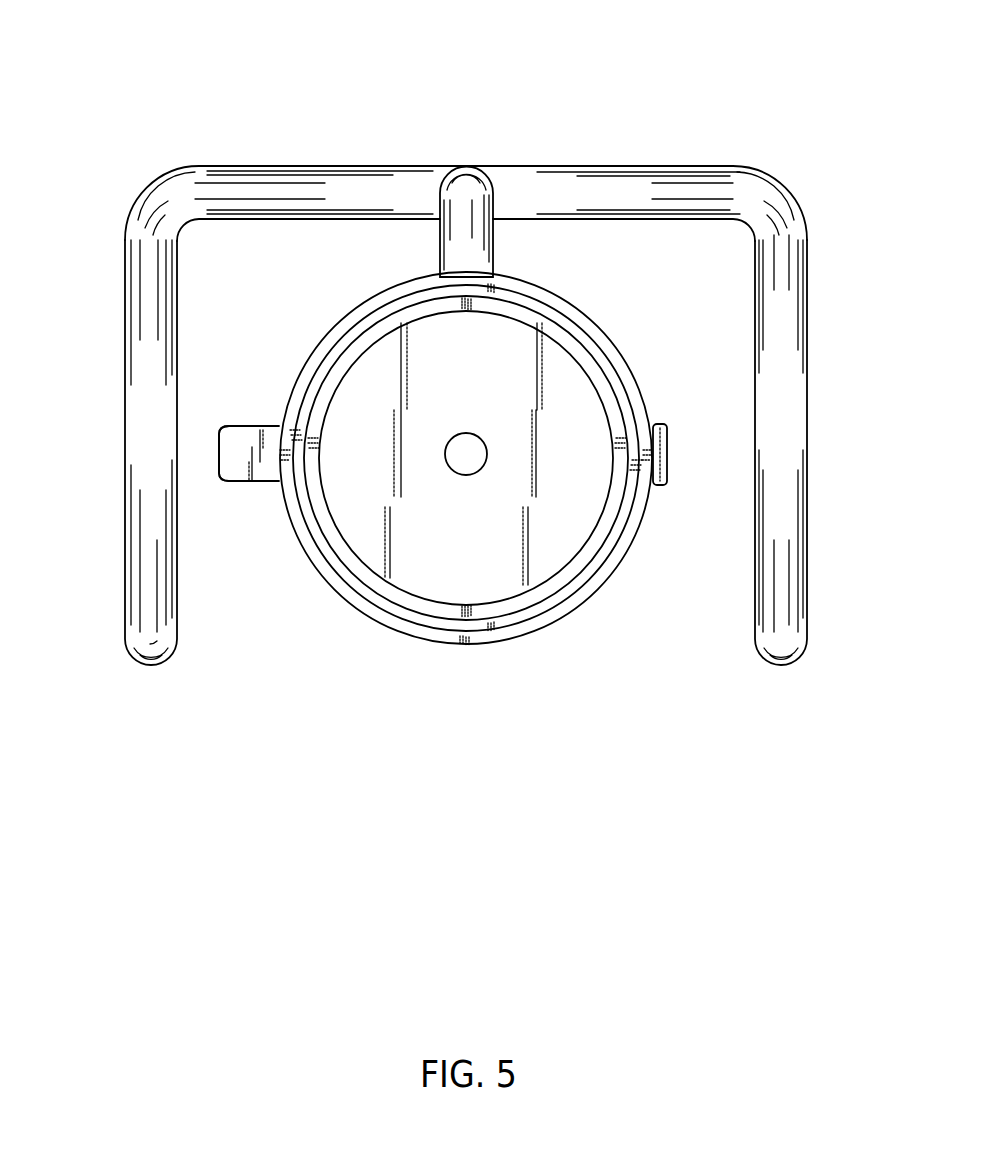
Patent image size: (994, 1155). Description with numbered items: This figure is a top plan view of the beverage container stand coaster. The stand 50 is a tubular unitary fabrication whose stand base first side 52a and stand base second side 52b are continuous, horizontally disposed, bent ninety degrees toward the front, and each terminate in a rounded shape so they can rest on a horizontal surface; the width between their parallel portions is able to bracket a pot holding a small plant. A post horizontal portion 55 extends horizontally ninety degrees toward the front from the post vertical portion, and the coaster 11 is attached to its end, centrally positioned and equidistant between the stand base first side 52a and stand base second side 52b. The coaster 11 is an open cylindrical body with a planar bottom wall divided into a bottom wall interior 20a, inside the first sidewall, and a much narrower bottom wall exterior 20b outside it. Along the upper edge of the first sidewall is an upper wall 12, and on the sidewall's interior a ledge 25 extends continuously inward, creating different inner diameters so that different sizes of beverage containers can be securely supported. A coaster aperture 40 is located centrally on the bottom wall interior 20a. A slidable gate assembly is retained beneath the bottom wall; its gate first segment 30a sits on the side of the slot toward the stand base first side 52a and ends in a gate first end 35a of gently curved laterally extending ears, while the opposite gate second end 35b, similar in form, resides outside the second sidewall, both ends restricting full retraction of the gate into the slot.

The stand 50 is at (511, 120).
The post horizontal portion 55 is at (469, 209).
The stand base first side 52a is at (123, 492).
The stand base second side 52b is at (807, 445).
The coaster 11 is at (463, 495).
The upper wall 12 is at (623, 347).
The bottom wall interior 20a is at (508, 338).
The bottom wall exterior 20b is at (590, 335).
The ledge 25 is at (555, 330).
The gate first segment 30a is at (258, 430).
The gate first end 35a is at (222, 423).
The gate second end 35b is at (664, 426).
The coaster aperture 40 is at (472, 462).